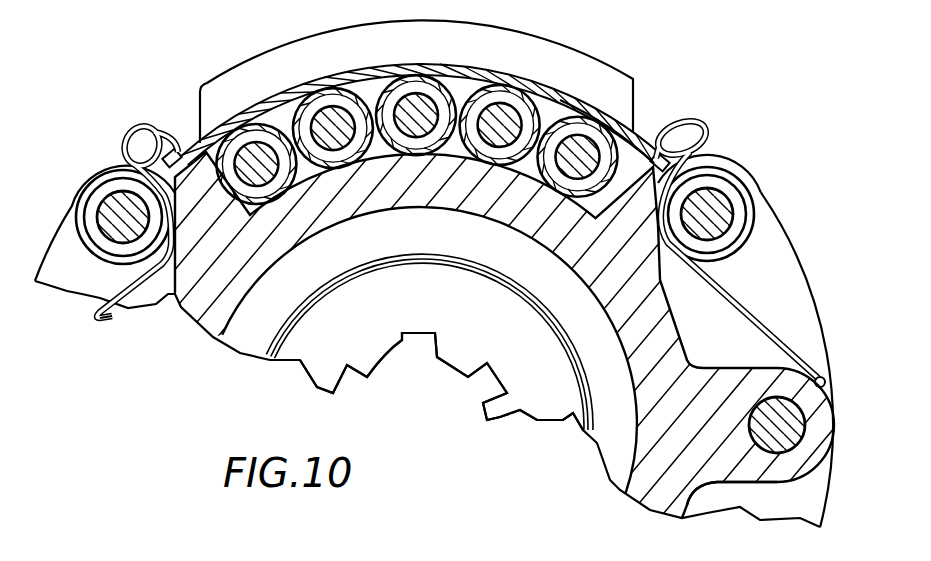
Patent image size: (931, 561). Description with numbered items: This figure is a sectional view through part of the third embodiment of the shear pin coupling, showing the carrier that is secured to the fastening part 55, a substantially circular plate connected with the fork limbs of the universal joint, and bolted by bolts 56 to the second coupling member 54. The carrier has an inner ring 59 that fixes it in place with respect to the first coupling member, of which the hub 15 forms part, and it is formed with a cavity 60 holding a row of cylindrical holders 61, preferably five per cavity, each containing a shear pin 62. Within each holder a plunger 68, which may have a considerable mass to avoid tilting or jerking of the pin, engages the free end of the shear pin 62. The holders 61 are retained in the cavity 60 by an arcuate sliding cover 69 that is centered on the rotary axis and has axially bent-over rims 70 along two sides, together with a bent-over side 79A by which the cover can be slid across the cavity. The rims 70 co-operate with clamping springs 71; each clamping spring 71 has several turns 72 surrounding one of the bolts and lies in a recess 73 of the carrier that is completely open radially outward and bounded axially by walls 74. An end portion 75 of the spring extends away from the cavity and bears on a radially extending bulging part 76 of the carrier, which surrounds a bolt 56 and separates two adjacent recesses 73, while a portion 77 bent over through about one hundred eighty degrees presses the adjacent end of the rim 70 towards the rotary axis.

The hub 15 is at (550, 403).
The second coupling member 54 is at (648, 512).
The fastening part 55 is at (617, 117).
The bolts 56 is at (108, 193).
The inner ring 59 is at (493, 260).
The cavity 60 is at (453, 152).
The cylindrical holder 61 is at (318, 100).
The shear pin 62 is at (418, 100).
The plunger 68 is at (264, 135).
The sliding cover 69 is at (580, 100).
The bent-over rim 70 is at (163, 137).
The clamping spring 71 is at (740, 182).
The turns 72 is at (748, 233).
The recess 73 is at (80, 281).
The walls 74 is at (768, 216).
The end portion 75 is at (112, 318).
The bulging part 76 is at (765, 466).
The bent-over portion 77 is at (133, 127).
The bent-over side 79A is at (262, 68).